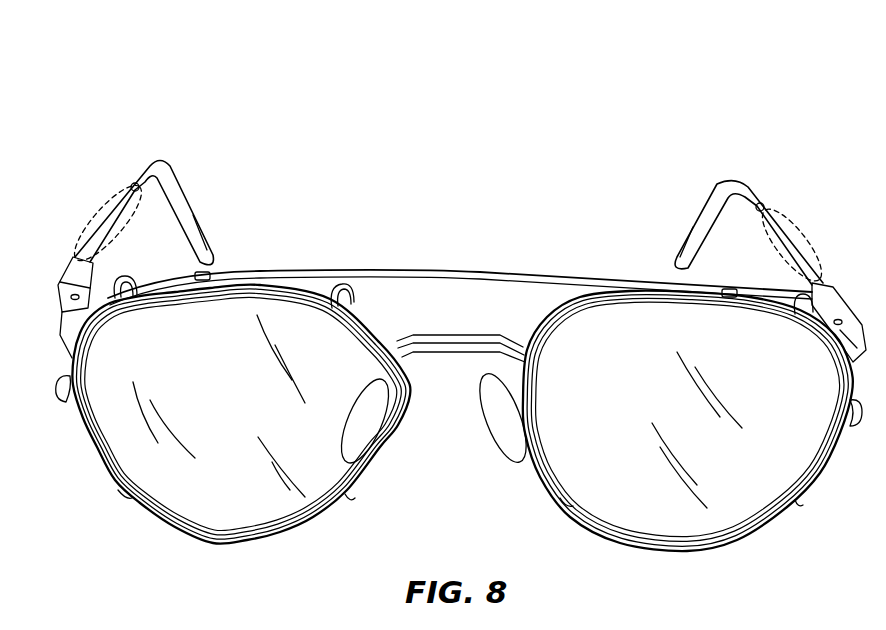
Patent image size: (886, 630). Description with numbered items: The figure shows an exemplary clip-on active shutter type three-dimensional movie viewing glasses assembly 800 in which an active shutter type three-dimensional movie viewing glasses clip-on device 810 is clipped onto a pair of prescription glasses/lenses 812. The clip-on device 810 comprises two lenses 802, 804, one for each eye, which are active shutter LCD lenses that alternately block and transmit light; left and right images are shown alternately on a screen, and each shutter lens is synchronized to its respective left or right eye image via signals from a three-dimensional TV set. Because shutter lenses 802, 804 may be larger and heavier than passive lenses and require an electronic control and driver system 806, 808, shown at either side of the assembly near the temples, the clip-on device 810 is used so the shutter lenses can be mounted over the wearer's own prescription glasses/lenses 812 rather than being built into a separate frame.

The clip-on active shutter type 3-D movie viewing glasses assembly 800 is at (733, 88).
The lens 802 is at (133, 457).
The lens 804 is at (750, 497).
The electronic control and driver system 806 is at (107, 205).
The electronic control and driver system 808 is at (797, 225).
The clip-on device 810 is at (442, 272).
The prescription glasses/lenses 812 is at (146, 270).